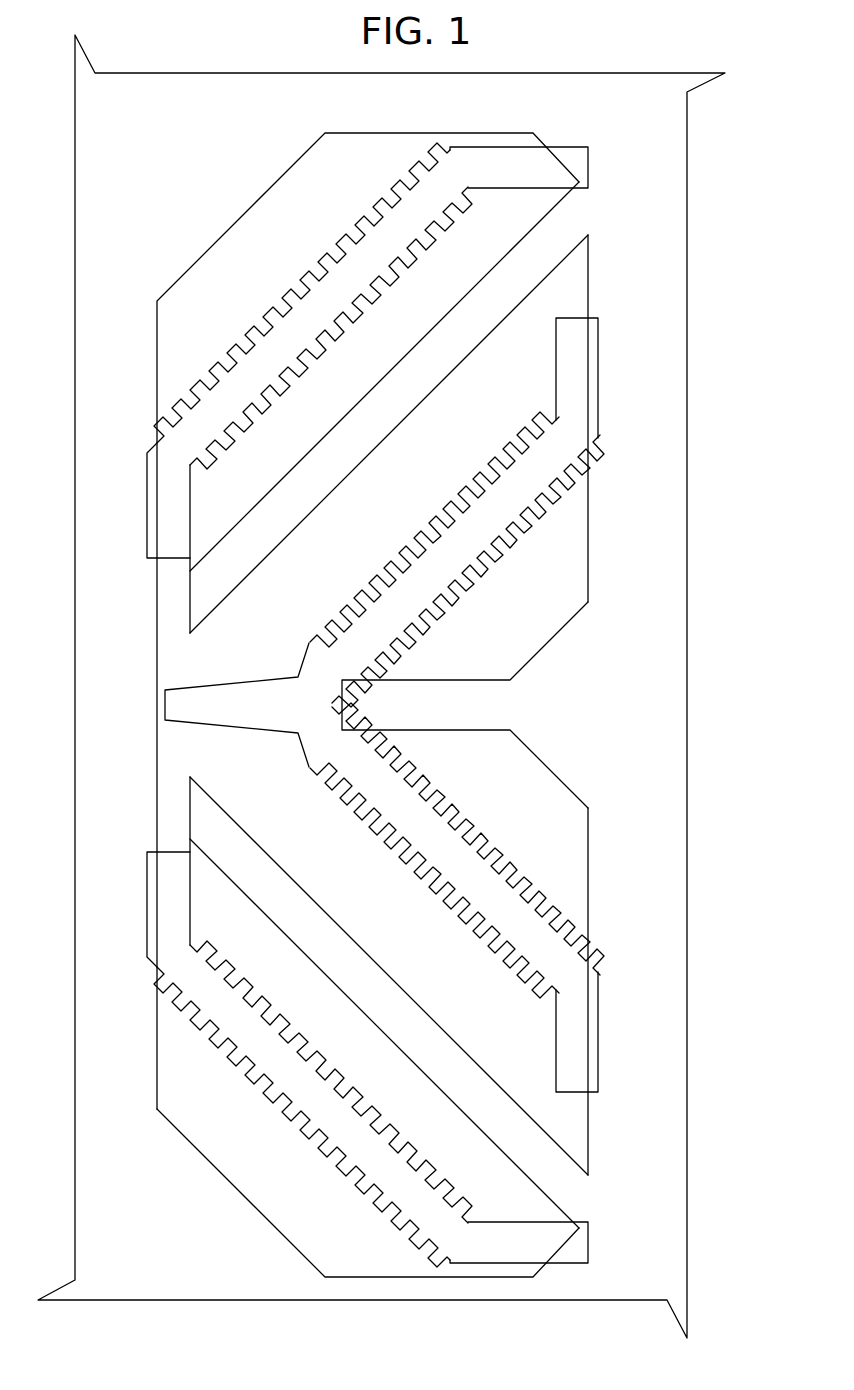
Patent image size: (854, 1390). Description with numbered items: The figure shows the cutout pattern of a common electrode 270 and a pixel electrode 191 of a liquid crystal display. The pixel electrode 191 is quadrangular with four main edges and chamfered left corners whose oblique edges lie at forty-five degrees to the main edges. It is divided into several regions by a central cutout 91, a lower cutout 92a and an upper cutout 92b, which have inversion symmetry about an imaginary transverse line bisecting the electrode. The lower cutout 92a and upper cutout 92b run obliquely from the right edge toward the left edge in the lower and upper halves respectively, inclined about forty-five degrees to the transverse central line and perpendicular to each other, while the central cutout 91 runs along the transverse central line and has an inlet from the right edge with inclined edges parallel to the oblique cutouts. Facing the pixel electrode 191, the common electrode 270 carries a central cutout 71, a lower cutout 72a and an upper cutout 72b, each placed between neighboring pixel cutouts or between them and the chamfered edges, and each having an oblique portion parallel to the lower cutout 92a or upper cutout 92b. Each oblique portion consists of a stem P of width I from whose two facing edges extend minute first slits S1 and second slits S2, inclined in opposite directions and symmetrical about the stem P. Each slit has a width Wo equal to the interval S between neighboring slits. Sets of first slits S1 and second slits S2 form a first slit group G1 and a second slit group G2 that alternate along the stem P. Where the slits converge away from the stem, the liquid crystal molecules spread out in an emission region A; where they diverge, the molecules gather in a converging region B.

The common electrode 270 is at (690, 712).
The central cutout 71 is at (205, 689).
The lower cutout 72a is at (250, 1012).
The upper cutout 72b is at (433, 192).
The central cutout 91 is at (497, 704).
The lower cutout 92a is at (352, 942).
The upper cutout 92b is at (297, 508).
The pixel electrode 191 is at (592, 580).
The emission region A is at (287, 283).
The converging region B is at (360, 217).
The first slit group G1 is at (363, 210).
The second slit group G2 is at (290, 277).
The stem P is at (365, 290).
The first slits S1 is at (330, 342).
The second slits S2 is at (345, 330).
The width of slit Wo is at (240, 404).
The interval S is at (258, 432).
The width of stem I is at (270, 336).